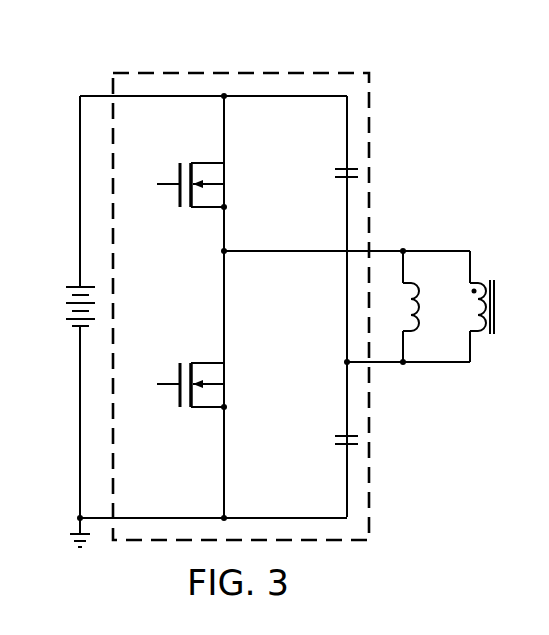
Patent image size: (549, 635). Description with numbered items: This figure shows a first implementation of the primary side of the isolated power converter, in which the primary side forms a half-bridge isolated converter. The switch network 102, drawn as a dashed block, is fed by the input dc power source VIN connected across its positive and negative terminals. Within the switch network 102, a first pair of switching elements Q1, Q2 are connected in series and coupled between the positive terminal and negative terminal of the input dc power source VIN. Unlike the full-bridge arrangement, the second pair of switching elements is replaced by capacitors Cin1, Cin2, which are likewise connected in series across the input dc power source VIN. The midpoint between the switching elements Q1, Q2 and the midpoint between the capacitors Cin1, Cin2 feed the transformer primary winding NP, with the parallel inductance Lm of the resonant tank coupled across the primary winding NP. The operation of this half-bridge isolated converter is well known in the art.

The switch network 102 is at (201, 68).
The input dc power source VIN is at (67, 307).
The first switching element Q1 is at (174, 185).
The second switching element Q2 is at (174, 385).
The first capacitor Cin1 is at (326, 173).
The second capacitor Cin2 is at (325, 442).
The parallel inductance Lm is at (399, 306).
The primary winding NP is at (470, 306).